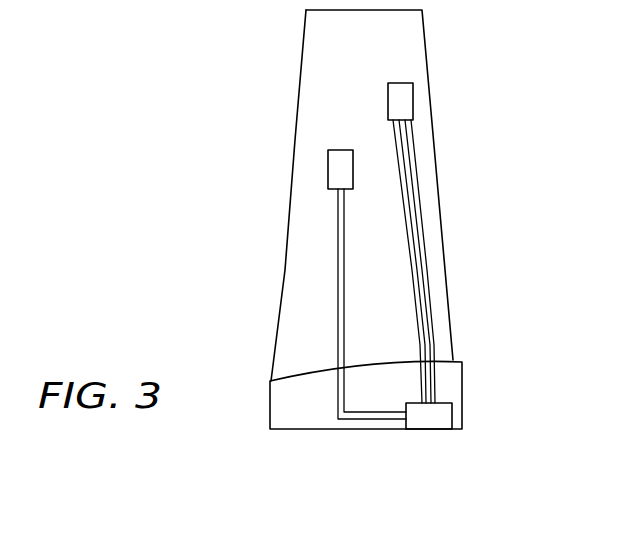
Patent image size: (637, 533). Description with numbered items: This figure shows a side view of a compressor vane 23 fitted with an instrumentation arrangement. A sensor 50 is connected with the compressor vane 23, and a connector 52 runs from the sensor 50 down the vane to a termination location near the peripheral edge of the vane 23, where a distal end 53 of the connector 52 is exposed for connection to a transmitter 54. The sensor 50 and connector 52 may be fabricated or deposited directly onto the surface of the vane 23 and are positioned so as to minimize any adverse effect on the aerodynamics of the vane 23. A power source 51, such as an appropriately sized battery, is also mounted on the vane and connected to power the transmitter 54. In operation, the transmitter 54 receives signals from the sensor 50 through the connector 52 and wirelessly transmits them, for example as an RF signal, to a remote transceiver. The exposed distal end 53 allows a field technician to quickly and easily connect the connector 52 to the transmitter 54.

The compressor vane 23 is at (424, 40).
The sensor 50 is at (413, 100).
The power source 51 is at (328, 173).
The connector 52 is at (402, 166).
The distal end 53 is at (444, 397).
The transmitter 54 is at (427, 415).